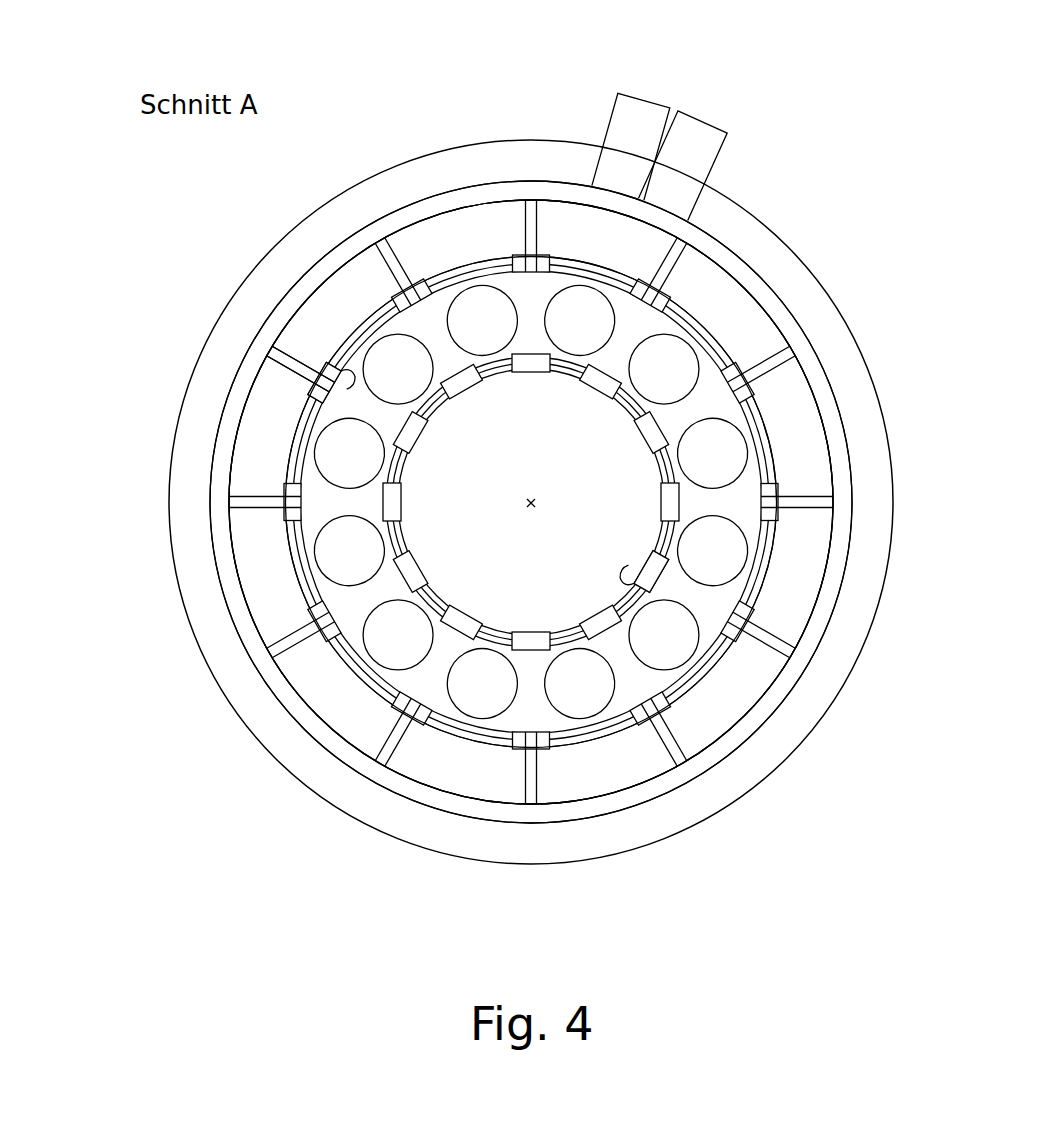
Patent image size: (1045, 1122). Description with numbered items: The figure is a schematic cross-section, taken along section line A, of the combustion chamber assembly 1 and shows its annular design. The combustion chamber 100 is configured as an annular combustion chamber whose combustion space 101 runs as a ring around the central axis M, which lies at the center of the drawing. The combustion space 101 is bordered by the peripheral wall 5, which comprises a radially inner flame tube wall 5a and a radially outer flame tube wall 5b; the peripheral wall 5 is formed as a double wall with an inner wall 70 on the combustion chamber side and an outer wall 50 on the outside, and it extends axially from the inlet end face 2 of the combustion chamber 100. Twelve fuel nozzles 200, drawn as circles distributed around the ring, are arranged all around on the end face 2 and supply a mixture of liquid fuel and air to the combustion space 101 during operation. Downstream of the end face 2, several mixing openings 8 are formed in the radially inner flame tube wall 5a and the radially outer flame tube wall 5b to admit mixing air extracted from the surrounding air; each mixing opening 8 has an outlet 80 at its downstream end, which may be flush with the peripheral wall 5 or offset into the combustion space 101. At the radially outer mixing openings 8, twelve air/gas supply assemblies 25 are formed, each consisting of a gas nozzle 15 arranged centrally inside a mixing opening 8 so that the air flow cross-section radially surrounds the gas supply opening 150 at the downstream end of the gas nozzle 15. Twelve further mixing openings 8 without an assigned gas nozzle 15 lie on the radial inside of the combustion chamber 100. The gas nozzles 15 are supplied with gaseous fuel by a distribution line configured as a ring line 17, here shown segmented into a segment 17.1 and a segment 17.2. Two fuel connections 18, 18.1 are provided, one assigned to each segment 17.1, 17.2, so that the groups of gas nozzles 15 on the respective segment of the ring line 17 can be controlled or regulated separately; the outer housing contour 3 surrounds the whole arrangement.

The combustion chamber assembly 1 is at (384, 95).
The end face 2 is at (548, 722).
The outer housing wall 3 is at (380, 174).
The peripheral wall 5 is at (431, 507).
The radially inner flame tube wall 5a is at (627, 412).
The radially outer flame tube wall 5b is at (554, 257).
The mixing opening 8 is at (313, 392).
The gas nozzle 15 is at (397, 268).
The ring line 17 is at (762, 288).
The segment of the ring line 17.1 is at (722, 748).
The segment of the ring line 17.2 is at (220, 520).
The fuel connection 18 is at (712, 158).
The fuel connection 18.1 is at (636, 126).
The air/gas supply assembly 25 is at (310, 360).
The outer wall 50 is at (459, 262).
The inner wall 70 is at (494, 266).
The outlet 80 is at (305, 406).
The combustion chamber 100 is at (478, 765).
The combustion space 101 is at (408, 677).
The gas supply opening 150 is at (305, 422).
The fuel nozzle 200 is at (353, 572).
The central axis M is at (528, 505).